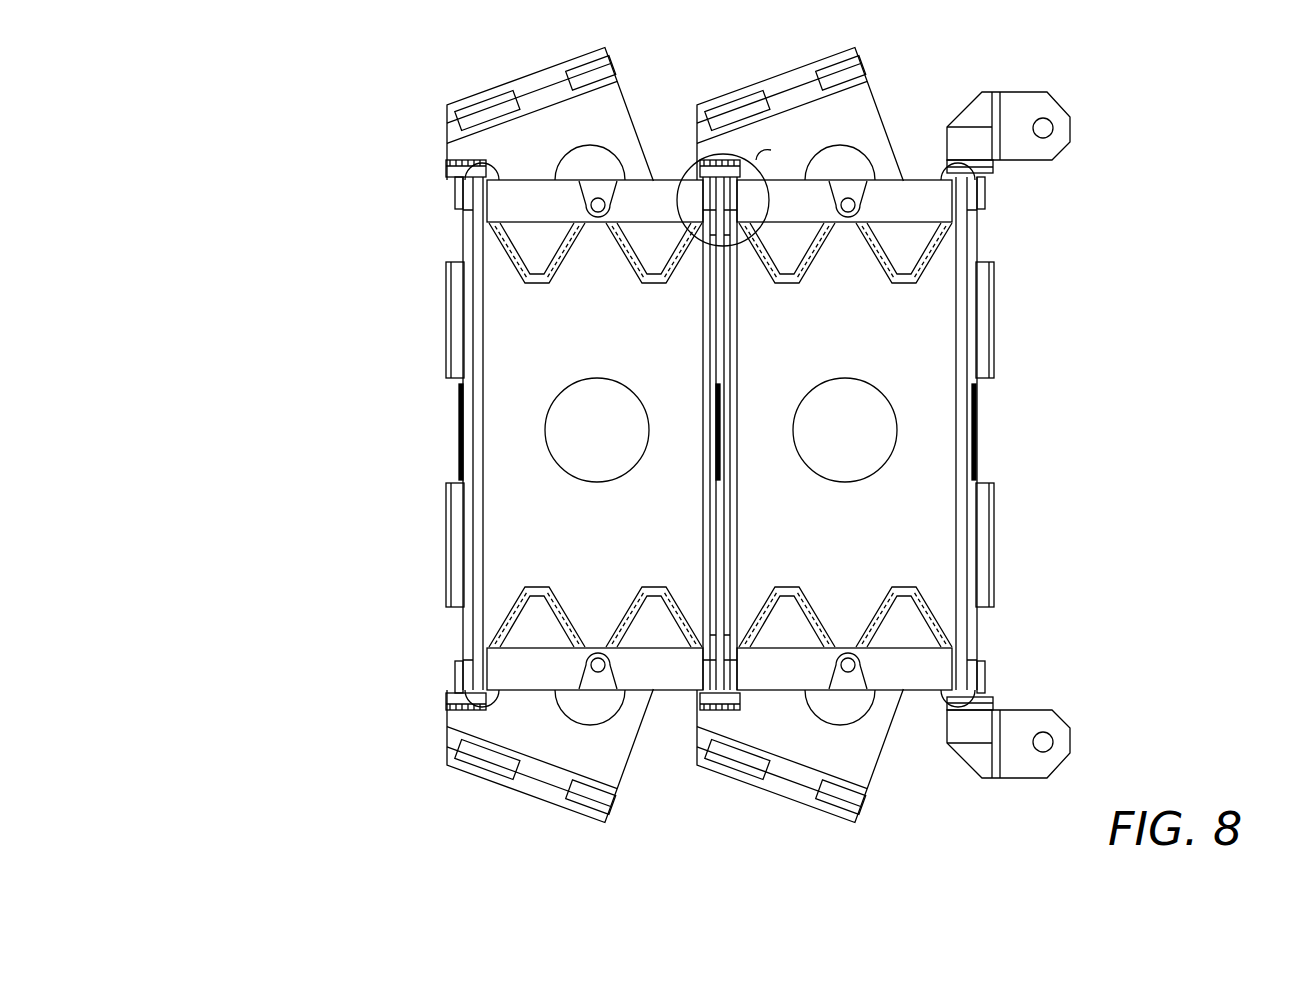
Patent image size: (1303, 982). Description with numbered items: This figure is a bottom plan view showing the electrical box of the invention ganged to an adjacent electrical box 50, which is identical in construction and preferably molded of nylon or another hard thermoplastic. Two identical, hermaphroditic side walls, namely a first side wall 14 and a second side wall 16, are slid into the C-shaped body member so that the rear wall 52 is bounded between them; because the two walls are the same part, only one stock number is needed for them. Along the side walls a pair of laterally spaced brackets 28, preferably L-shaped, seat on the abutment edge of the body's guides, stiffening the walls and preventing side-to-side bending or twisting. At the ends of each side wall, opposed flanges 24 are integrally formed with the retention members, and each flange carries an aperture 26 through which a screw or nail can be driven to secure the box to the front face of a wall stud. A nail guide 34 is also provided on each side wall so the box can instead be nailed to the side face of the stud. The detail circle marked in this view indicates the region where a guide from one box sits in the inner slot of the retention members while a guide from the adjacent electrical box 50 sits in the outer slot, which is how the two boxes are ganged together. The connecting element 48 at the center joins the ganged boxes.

The first side wall 14 is at (426, 435).
The second side wall 16 is at (1016, 416).
The opposed flanges 24 is at (1020, 93).
The aperture 26 is at (1052, 120).
The laterally spaced brackets 28 is at (446, 323).
The nail guide 34 is at (514, 82).
The connecting rod 48 is at (688, 700).
The adjacent electrical box 50 is at (368, 141).
The rear wall 52 is at (599, 356).